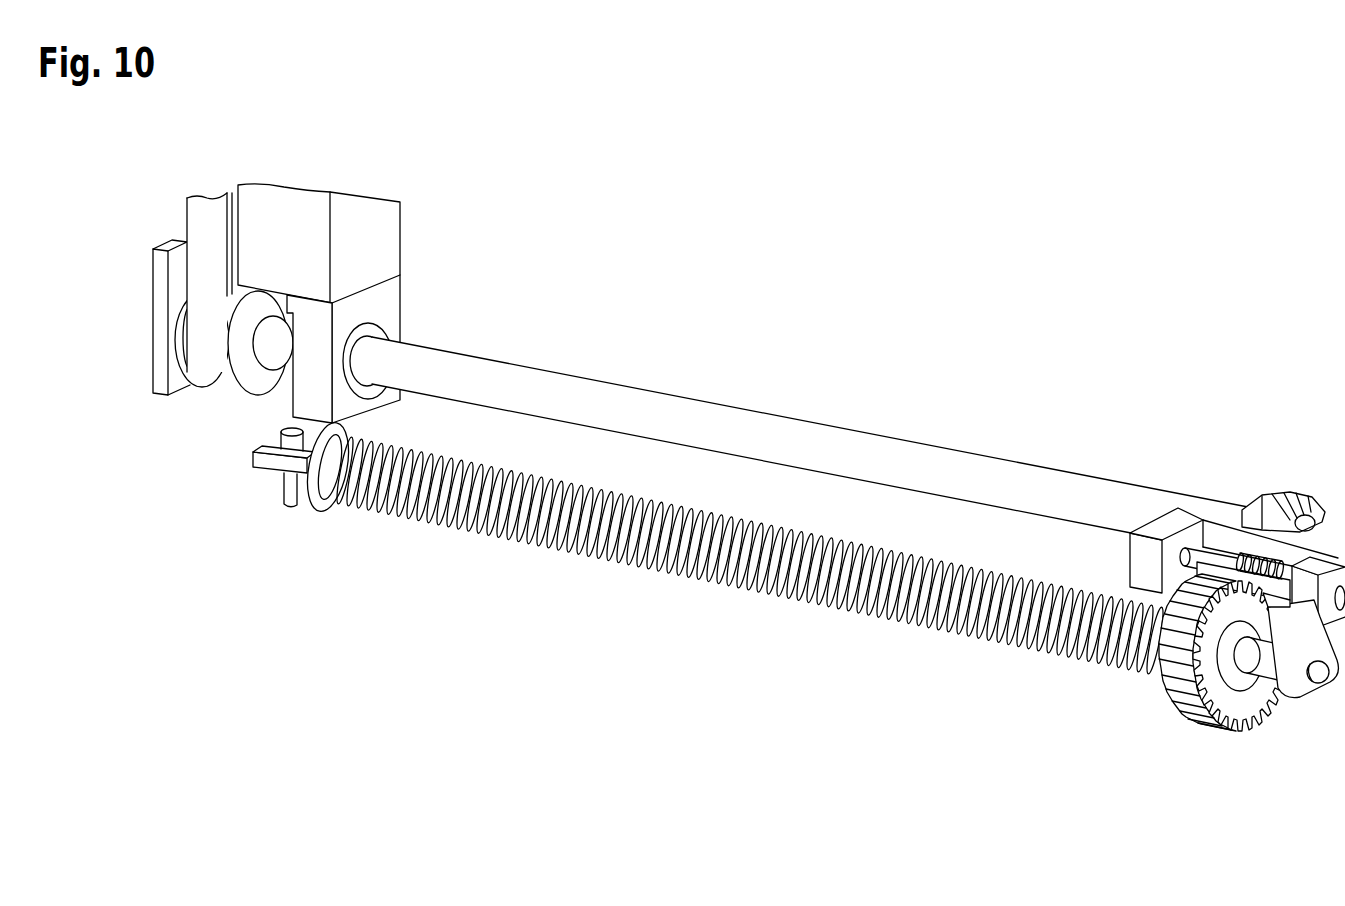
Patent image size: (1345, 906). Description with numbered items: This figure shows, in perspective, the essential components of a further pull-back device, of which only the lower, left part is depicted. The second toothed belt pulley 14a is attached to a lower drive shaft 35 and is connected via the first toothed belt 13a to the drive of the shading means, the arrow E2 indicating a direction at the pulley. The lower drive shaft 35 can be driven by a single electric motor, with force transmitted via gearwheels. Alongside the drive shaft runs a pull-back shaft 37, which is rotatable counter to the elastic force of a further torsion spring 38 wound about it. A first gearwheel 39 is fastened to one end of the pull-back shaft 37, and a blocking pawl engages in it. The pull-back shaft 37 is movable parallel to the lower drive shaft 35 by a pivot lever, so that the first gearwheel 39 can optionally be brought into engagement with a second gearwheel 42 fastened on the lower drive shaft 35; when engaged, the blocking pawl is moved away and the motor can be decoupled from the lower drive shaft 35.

The first toothed belt 13a is at (205, 222).
The adjustment direction E2 is at (126, 320).
The second toothed belt pulley 14a is at (190, 373).
The lower drive shaft 35 is at (827, 440).
The pull-back shaft 37 is at (540, 580).
The further torsion spring 38 is at (850, 618).
The first gearwheel 39 is at (1180, 718).
The second gearwheel 42 is at (1270, 493).